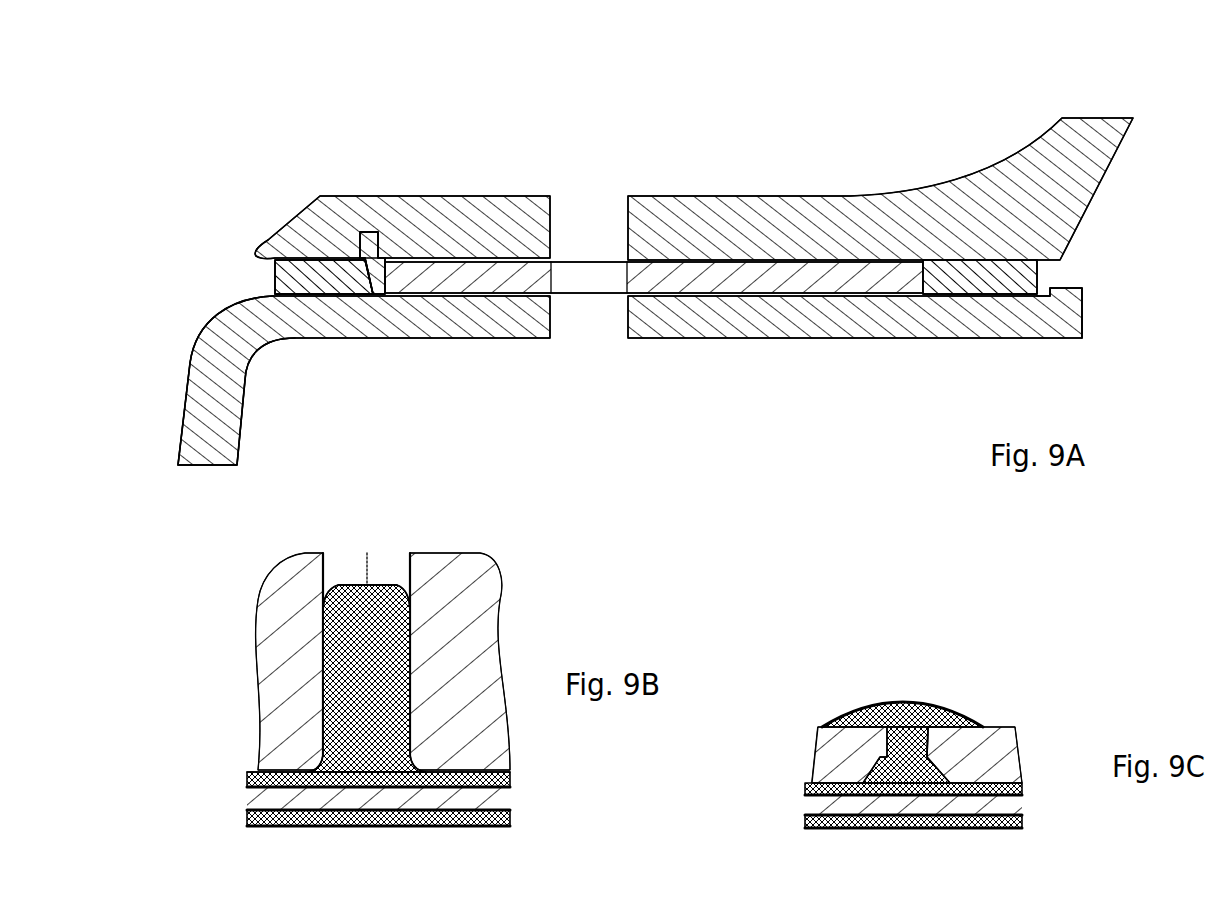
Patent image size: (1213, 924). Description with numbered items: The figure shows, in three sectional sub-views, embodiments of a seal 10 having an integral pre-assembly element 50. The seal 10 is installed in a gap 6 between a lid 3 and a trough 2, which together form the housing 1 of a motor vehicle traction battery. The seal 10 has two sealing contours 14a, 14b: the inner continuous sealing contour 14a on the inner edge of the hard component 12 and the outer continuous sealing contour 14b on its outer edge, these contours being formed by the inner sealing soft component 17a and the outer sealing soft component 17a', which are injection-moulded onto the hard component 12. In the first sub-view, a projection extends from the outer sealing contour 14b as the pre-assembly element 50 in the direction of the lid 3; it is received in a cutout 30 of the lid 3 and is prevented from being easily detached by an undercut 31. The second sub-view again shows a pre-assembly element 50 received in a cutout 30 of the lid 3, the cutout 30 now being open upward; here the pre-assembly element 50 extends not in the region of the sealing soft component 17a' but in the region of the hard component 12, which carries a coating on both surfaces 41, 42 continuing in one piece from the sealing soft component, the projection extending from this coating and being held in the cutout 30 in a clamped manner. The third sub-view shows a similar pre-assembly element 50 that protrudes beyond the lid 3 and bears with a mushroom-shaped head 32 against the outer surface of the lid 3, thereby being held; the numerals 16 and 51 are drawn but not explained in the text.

In FIG. 9A, the housing 1 is at (244, 171).
In FIG. 9A, the trough 2 is at (212, 383).
In FIG. 9A, the lid 3 is at (482, 207).
In FIG. 9B, the lid 3 is at (486, 683).
In FIG. 9C, the lid 3 is at (990, 752).
In FIG. 9A, the gap 6 is at (264, 279).
In FIG. 9A, the seal 10 is at (512, 280).
In FIG. 9A, the hard component 12 is at (733, 272).
In FIG. 9B, the hard component 12 is at (445, 826).
In FIG. 9C, the hard component 12 is at (950, 830).
In FIG. 9A, the inner continuous sealing contour 14a is at (1000, 320).
In FIG. 9A, the outer continuous sealing contour 14b is at (360, 278).
In FIG. 9A, the recess 16 is at (589, 277).
In FIG. 9A, the inner sealing soft component 17a is at (973, 325).
In FIG. 9A, the outer sealing soft component 17a' is at (324, 326).
In FIG. 9A, the cutout 30 is at (381, 243).
In FIG. 9B, the cutout 30 is at (397, 575).
In FIG. 9C, the cutout 30 is at (930, 714).
In FIG. 9A, the undercut 31 is at (381, 294).
In FIG. 9C, the undercut 31 is at (838, 714).
In FIG. 9C, the mushroom-shaped head 32 is at (960, 710).
In FIG. 9B, the coated surface 41 is at (506, 788).
In FIG. 9C, the coated surface 41 is at (1012, 796).
In FIG. 9B, the coated surface 42 is at (255, 808).
In FIG. 9C, the coated surface 42 is at (818, 814).
In FIG. 9A, the pre-assembly element 50 is at (372, 235).
In FIG. 9B, the pre-assembly element 50 is at (352, 584).
In FIG. 9C, the pre-assembly element 50 is at (890, 714).
In FIG. 9B, the plug foot 51 is at (253, 774).